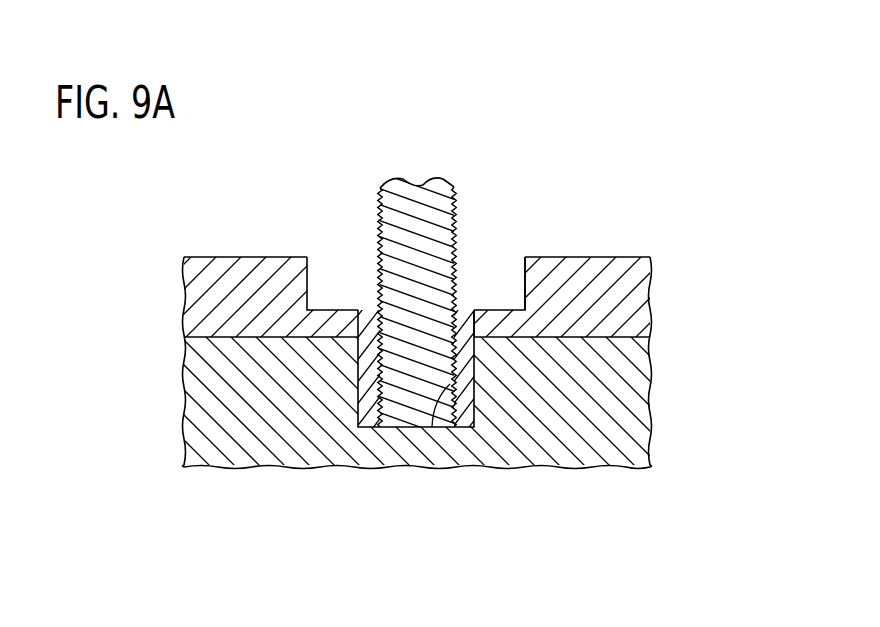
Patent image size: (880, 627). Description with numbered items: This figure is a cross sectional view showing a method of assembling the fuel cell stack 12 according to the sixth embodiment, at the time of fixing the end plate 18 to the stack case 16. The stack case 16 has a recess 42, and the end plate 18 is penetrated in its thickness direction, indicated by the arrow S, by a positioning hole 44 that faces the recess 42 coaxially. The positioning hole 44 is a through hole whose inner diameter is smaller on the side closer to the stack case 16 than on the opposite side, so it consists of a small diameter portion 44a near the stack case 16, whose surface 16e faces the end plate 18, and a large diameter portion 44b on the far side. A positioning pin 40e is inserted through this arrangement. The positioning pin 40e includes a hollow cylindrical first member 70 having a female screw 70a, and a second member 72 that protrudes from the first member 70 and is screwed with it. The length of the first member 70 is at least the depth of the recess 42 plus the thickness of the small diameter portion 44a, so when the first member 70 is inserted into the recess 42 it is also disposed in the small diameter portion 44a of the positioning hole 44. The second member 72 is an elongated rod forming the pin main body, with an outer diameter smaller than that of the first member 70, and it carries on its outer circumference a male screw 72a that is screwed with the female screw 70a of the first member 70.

The fuel cell stack 12 is at (237, 226).
The stack case 16 is at (655, 425).
The surface of second member 16e is at (618, 398).
The end plate 18 is at (585, 256).
The recess 42 is at (363, 398).
The positioning hole 44 is at (326, 256).
The small diameter portion 44a is at (472, 320).
The large diameter portion 44b is at (525, 278).
The first member 70 is at (465, 412).
The female screw 70a is at (432, 427).
The second member 72 is at (414, 215).
The male screw 72a is at (378, 283).
The positioning pin 40e is at (378, 185).
The arrow S is at (72, 373).